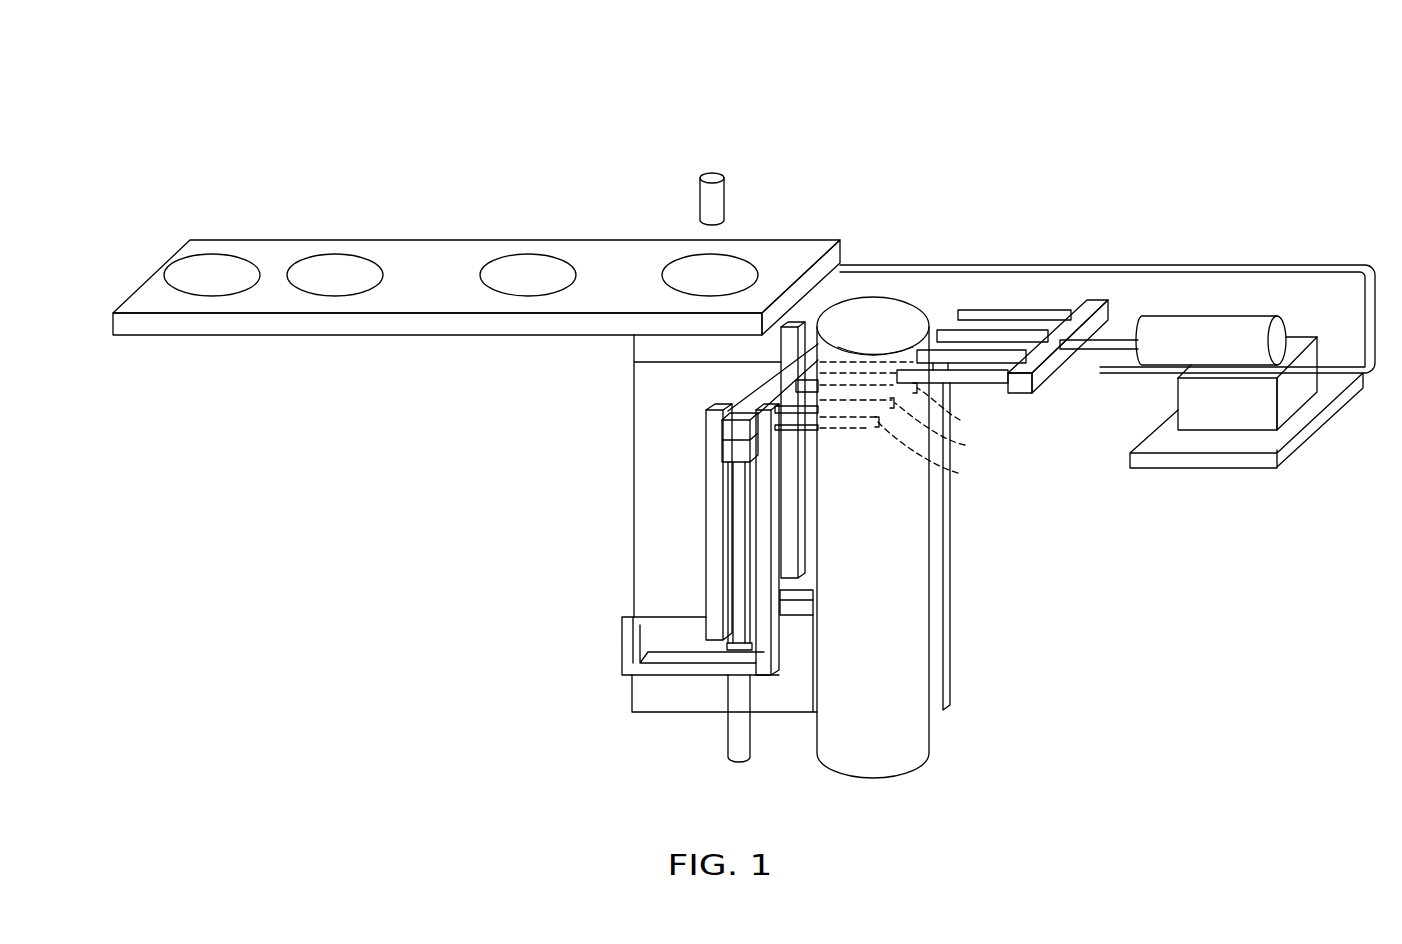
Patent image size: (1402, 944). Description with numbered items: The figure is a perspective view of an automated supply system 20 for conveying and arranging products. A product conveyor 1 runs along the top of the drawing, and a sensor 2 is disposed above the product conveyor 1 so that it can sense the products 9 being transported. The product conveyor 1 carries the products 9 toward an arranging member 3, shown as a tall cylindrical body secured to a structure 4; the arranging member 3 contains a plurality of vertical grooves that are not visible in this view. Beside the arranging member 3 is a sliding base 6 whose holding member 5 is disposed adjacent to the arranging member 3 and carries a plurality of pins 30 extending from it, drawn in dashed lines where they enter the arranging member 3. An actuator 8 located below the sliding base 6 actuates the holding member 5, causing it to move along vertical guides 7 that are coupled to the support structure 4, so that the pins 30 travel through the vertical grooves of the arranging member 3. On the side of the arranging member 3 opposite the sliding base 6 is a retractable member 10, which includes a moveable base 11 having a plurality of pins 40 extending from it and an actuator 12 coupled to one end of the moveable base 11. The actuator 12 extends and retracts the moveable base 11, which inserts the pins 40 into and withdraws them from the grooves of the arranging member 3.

The automated supply system 20 is at (166, 90).
The product conveyor 1 is at (423, 250).
The products 9 is at (228, 266).
The sensor 2 is at (713, 176).
The arranging member 3 is at (917, 553).
The structure 4 is at (652, 382).
The holding member 5 is at (758, 400).
The sliding base 6 is at (657, 488).
The vertical guides 7 is at (717, 558).
The actuator 8 is at (735, 737).
The pins 30 is at (916, 427).
The pins 40 is at (948, 335).
The moveable base 11 is at (1090, 305).
The retractable member 10 is at (1105, 372).
The actuator 12 is at (1173, 322).